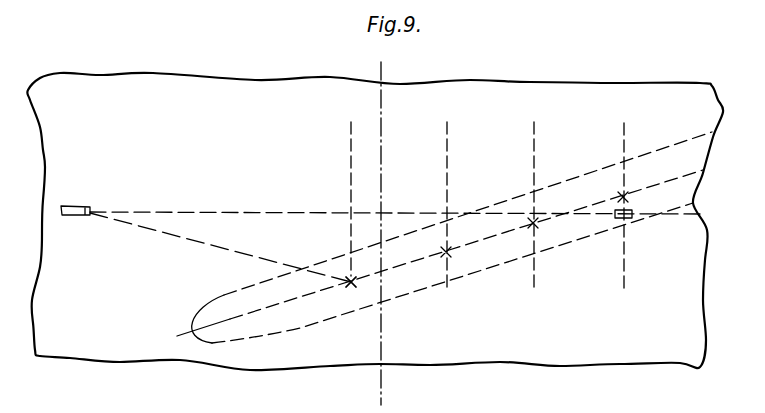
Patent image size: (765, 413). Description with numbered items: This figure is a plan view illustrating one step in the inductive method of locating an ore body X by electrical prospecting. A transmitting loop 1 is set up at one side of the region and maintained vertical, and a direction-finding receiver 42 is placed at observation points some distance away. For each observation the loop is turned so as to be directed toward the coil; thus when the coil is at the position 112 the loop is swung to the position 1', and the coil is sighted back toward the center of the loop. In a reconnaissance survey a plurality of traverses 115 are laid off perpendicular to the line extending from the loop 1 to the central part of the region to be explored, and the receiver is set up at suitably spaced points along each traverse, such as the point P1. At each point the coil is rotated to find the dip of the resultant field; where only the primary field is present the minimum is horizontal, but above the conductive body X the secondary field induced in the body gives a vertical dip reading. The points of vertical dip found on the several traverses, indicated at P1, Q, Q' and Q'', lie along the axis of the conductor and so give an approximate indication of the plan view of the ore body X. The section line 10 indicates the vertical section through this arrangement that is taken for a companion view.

The transmitting loop 1 is at (93, 194).
The turned position of transmitting loop 1' is at (82, 176).
The section line of Fig. 10 is at (357, 58).
The direction-finding receiver 42 is at (631, 219).
The position of the coil 112 is at (350, 287).
The traverses 115 is at (625, 138).
The ore body X is at (493, 270).
The point of vertical dip Q is at (552, 250).
The point of vertical dip Q' is at (466, 238).
The point of vertical dip Q'' is at (379, 265).
The point of vertical dip P1 is at (634, 186).